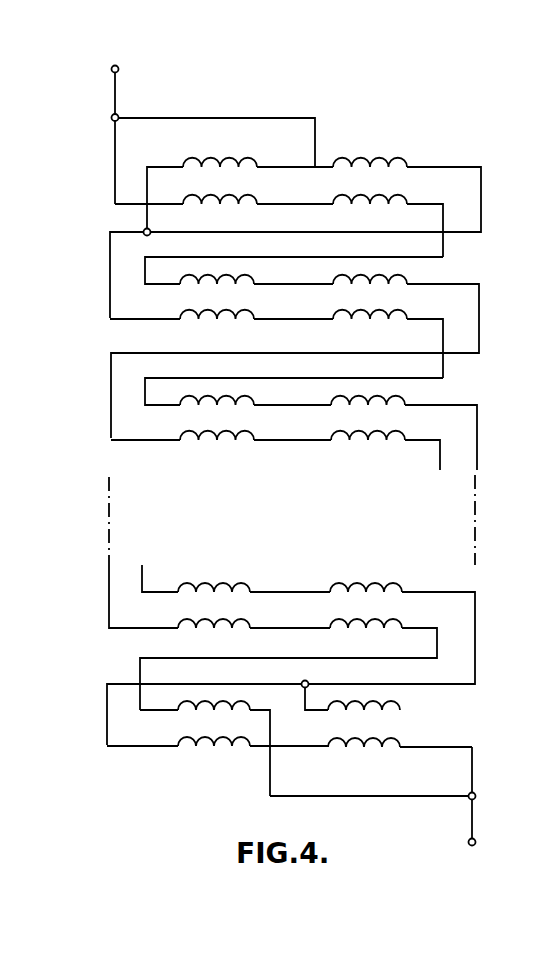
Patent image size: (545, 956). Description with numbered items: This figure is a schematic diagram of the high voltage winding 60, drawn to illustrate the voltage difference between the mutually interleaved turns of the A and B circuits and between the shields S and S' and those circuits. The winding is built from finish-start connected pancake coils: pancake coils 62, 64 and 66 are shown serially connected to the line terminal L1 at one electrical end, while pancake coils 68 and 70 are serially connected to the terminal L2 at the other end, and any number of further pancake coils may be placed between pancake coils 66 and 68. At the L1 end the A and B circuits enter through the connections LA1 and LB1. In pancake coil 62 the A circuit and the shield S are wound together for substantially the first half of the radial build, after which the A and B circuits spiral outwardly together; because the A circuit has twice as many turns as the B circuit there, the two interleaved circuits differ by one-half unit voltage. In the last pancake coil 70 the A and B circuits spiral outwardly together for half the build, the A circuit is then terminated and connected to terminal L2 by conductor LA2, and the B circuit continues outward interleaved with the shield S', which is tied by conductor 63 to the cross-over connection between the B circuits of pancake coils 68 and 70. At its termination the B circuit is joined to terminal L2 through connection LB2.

The high voltage winding 60 is at (295, 203).
The pancake coil 62 is at (518, 206).
The pancake coil 64 is at (518, 318).
The pancake coil 66 is at (513, 444).
The pancake coil 68 is at (511, 622).
The pancake coil 70 is at (306, 739).
The conductor 63 is at (309, 711).
The shield S is at (220, 148).
The shield S' is at (383, 714).
The line terminal L1 is at (112, 69).
The terminal L2 is at (475, 839).
The conductor LA1 is at (113, 130).
The conductor LB1 is at (193, 118).
The conductor LA2 is at (318, 797).
The connection LB2 is at (473, 781).